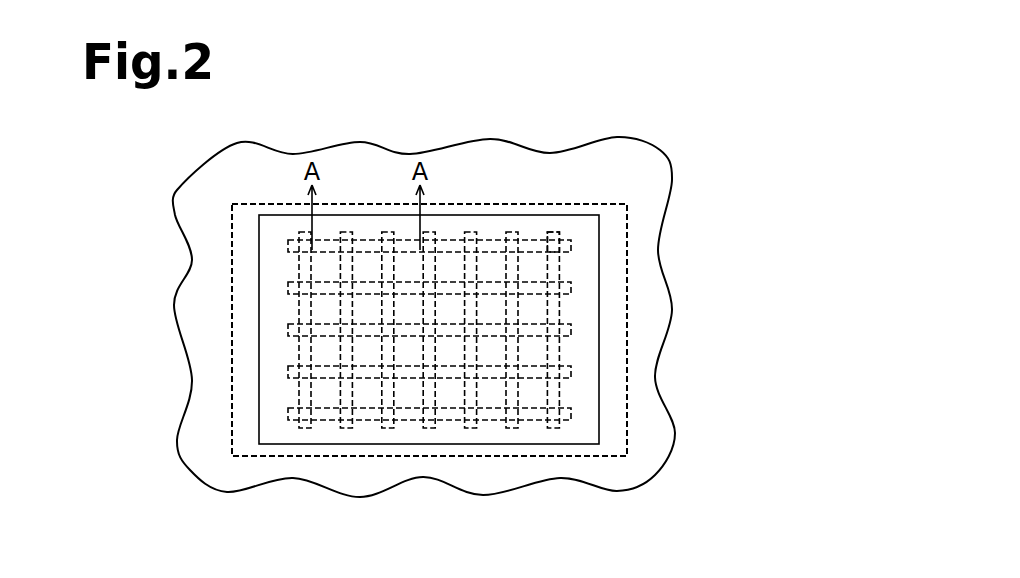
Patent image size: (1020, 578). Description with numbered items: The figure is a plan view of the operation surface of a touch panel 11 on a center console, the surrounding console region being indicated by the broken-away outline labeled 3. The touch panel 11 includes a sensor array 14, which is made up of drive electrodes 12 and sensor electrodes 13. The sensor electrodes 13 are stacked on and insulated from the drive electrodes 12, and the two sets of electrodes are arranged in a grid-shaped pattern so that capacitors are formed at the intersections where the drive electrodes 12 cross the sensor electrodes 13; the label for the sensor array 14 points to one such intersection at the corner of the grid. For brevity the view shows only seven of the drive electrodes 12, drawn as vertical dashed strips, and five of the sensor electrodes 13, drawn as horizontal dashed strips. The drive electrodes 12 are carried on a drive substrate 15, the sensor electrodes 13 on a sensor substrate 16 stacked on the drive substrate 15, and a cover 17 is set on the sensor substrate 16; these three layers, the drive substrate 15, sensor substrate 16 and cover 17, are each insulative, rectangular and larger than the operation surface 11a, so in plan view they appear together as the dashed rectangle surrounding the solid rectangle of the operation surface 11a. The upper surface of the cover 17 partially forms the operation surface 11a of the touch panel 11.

The substrate 3 is at (183, 222).
The touch panel 11 is at (646, 195).
The operation surface 11a is at (592, 266).
The drive electrodes 12 is at (512, 428).
The sensor electrodes 13 is at (571, 329).
The sensor array 14 is at (558, 230).
The drive substrate 15 is at (628, 220).
The sensor substrate 16 is at (429, 330).
The cover 17 is at (429, 330).